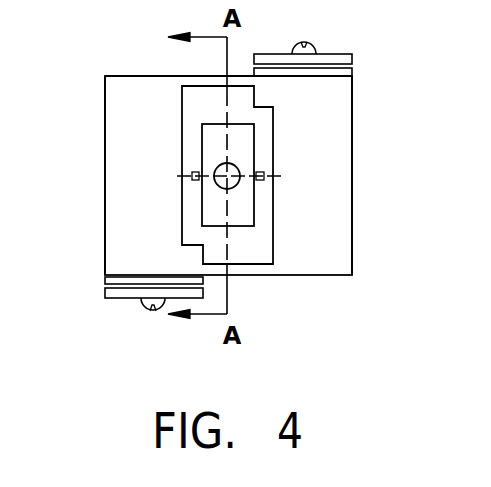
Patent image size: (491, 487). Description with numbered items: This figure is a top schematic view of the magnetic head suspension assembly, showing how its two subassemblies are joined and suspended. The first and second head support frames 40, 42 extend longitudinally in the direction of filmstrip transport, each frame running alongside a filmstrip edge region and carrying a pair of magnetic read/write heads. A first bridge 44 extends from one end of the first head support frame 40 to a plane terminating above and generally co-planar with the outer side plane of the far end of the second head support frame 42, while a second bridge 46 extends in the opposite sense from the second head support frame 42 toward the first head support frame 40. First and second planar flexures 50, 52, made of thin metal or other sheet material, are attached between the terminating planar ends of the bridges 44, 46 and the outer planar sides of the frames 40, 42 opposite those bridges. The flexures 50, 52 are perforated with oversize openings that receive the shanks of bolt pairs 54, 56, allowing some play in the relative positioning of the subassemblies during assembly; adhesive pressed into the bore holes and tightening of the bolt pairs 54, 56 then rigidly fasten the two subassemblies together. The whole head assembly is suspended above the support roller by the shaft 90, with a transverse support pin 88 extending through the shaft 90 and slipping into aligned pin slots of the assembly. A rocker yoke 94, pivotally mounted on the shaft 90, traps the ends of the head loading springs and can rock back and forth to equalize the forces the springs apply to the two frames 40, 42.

The first head support frame 40 is at (303, 277).
The second head support frame 42 is at (140, 75).
The first bridge 44 is at (105, 122).
The second bridge 46 is at (352, 226).
The first planar flexure 50 is at (365, 60).
The second planar flexure 52 is at (97, 275).
The bolt pair 54 is at (308, 46).
The bolt pair 56 is at (150, 308).
The transverse support pin 88 is at (258, 172).
The shaft 90 is at (232, 181).
The rocker yoke 94 is at (256, 152).